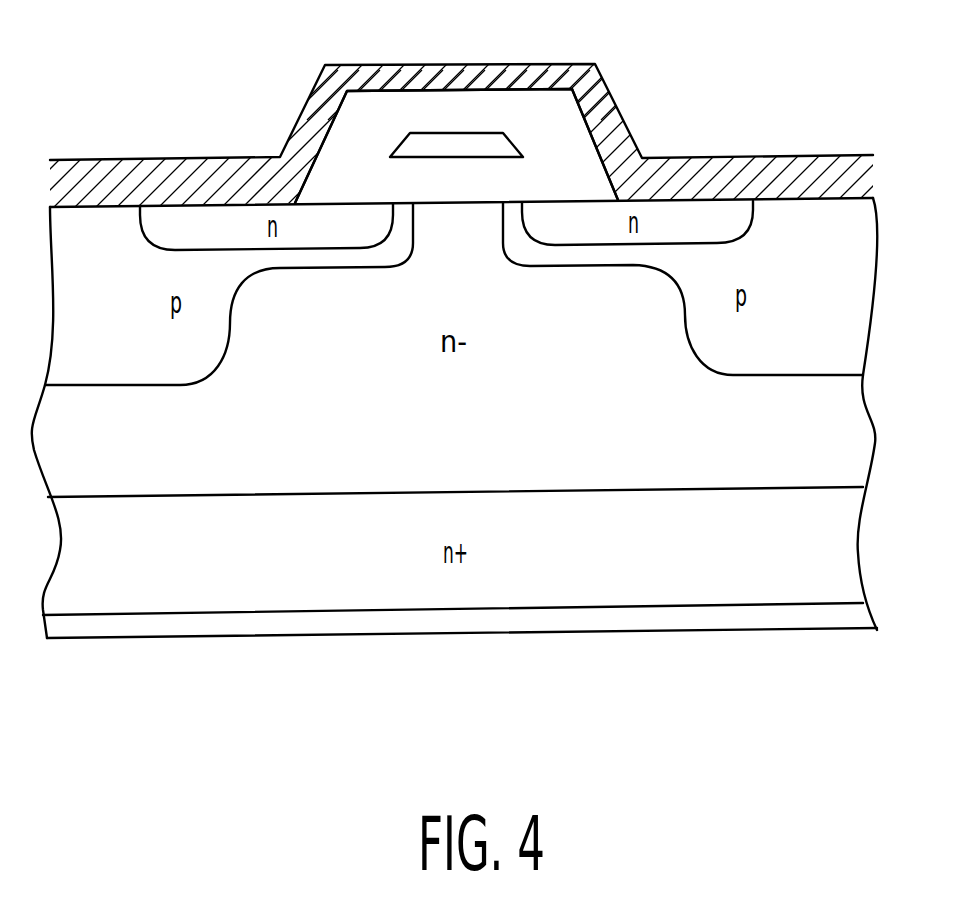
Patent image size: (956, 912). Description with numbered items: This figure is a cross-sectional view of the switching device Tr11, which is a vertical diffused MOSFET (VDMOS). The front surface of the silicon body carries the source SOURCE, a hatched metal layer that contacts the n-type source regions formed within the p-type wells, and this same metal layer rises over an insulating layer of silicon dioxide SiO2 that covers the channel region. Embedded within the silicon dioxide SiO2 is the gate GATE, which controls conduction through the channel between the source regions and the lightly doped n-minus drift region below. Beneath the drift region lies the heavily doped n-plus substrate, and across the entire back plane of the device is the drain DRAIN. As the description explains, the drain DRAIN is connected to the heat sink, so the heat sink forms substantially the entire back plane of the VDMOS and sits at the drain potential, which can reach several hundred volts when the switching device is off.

The source SOURCE is at (220, 160).
The gate GATE is at (457, 133).
The drain DRAIN is at (592, 637).
The silicon dioxide SiO2 is at (456, 146).